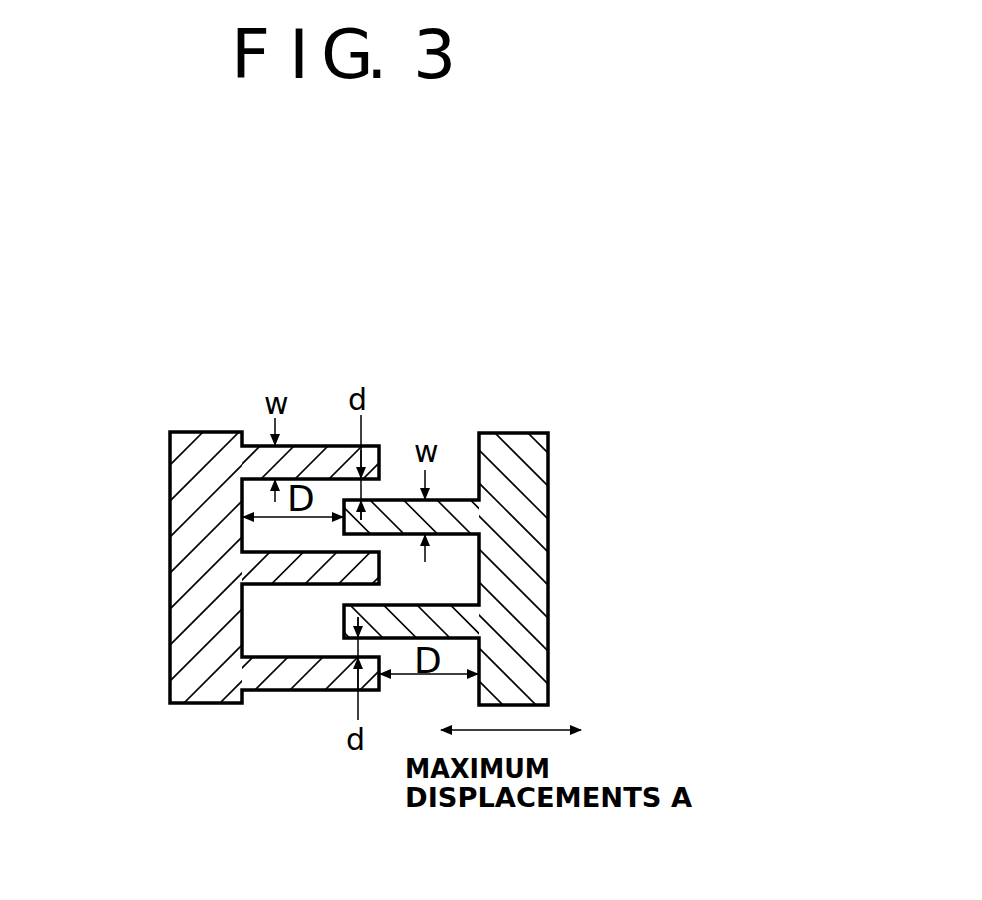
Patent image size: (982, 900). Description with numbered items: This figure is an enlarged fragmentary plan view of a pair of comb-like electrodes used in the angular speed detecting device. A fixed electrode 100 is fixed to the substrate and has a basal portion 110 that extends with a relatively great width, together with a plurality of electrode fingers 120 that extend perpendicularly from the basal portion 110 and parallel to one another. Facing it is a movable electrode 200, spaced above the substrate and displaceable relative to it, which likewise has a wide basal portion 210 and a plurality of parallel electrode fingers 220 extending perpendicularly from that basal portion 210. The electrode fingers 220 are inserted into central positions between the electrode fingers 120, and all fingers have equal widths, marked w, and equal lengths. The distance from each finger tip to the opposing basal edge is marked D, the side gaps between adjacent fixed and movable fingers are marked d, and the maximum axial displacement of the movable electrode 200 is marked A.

The fixed electrode 100 is at (491, 450).
The basal portion 110 is at (170, 510).
The electrode fingers 120 is at (286, 692).
The movable electrode 200 is at (491, 450).
The basal portion 210 is at (549, 514).
The electrode fingers 220 is at (458, 499).